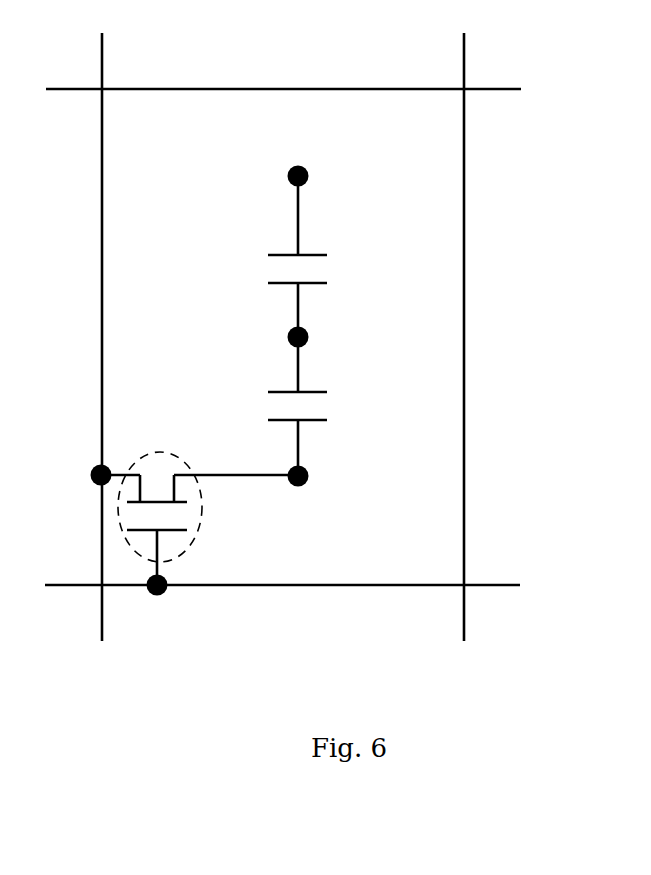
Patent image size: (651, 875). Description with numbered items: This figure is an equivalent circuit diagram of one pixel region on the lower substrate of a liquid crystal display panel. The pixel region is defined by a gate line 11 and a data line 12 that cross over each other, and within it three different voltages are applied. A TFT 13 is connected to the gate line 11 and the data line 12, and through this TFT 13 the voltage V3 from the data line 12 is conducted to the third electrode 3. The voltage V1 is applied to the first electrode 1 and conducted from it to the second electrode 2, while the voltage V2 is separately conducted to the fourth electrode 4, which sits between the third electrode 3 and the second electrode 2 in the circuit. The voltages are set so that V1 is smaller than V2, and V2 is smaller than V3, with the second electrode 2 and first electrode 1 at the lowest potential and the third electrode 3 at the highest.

The first electrode 1 is at (338, 208).
The second electrode 2 is at (338, 208).
The third electrode 3 is at (257, 457).
The fourth electrode 4 is at (317, 337).
The gate line 11 is at (306, 336).
The data line 12 is at (285, 358).
The TFT 13 is at (151, 445).